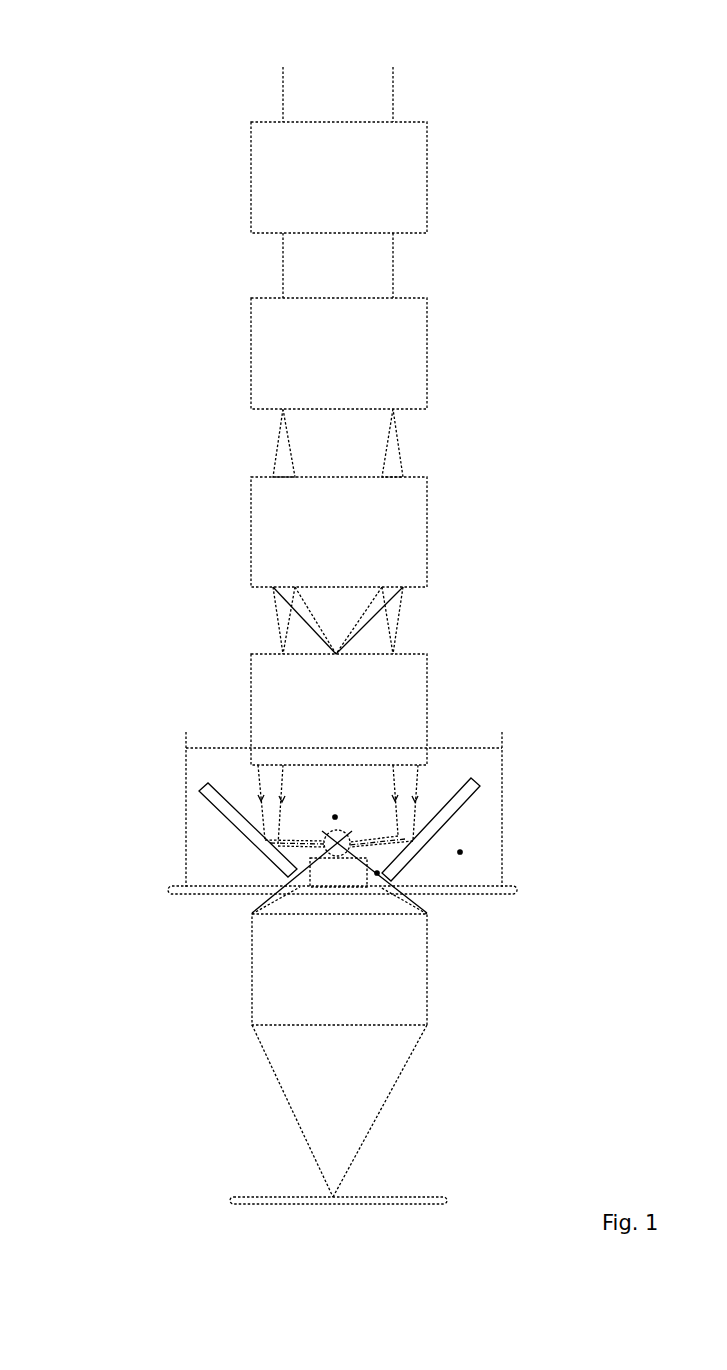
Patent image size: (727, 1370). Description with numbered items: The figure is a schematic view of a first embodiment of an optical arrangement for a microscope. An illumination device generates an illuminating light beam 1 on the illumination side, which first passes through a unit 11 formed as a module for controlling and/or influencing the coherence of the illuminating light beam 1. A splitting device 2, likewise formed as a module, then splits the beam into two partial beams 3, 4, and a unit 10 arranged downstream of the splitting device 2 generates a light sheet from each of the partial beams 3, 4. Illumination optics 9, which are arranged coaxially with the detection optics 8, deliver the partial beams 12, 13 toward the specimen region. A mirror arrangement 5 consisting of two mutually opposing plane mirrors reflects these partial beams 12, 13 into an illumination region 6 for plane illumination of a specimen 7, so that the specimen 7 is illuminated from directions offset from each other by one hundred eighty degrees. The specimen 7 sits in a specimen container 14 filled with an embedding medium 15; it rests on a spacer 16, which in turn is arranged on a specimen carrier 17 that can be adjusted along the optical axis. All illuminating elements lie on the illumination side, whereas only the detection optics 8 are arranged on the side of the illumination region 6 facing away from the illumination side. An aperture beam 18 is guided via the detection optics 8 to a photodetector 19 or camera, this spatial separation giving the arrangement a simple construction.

The illuminating light beam 1 is at (393, 107).
The unit for controlling and/or influencing the coherence 11 is at (251, 185).
The splitting device 2 is at (251, 370).
The partial beam 3 is at (275, 450).
The partial beam 4 is at (400, 448).
The unit for generating a light sheet 10 is at (251, 540).
The illumination optics 9 is at (251, 703).
The partial beam 12 is at (335, 817).
The partial beam 13 is at (418, 782).
The illumination region 6 is at (326, 838).
The specimen 7 is at (276, 832).
The mirror arrangement 5 is at (252, 826).
The spacer 16 is at (377, 873).
The embedding medium 15 is at (460, 852).
The specimen container 14 is at (502, 860).
The specimen carrier 17 is at (502, 886).
The aperture beam 18 is at (262, 890).
The detection optics 8 is at (427, 945).
The photodetector 19 is at (357, 1198).